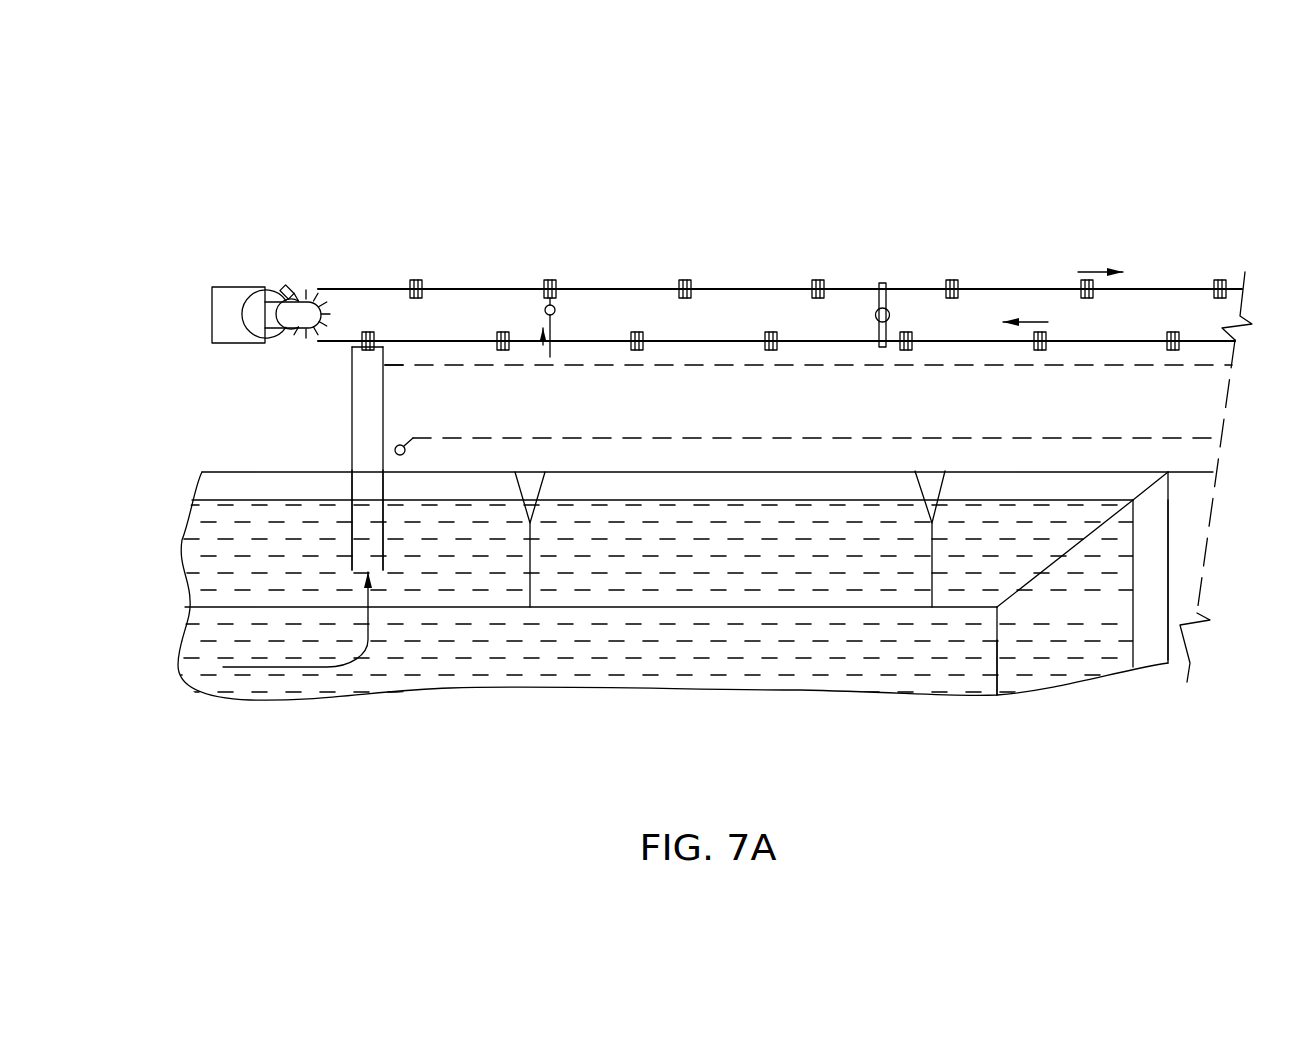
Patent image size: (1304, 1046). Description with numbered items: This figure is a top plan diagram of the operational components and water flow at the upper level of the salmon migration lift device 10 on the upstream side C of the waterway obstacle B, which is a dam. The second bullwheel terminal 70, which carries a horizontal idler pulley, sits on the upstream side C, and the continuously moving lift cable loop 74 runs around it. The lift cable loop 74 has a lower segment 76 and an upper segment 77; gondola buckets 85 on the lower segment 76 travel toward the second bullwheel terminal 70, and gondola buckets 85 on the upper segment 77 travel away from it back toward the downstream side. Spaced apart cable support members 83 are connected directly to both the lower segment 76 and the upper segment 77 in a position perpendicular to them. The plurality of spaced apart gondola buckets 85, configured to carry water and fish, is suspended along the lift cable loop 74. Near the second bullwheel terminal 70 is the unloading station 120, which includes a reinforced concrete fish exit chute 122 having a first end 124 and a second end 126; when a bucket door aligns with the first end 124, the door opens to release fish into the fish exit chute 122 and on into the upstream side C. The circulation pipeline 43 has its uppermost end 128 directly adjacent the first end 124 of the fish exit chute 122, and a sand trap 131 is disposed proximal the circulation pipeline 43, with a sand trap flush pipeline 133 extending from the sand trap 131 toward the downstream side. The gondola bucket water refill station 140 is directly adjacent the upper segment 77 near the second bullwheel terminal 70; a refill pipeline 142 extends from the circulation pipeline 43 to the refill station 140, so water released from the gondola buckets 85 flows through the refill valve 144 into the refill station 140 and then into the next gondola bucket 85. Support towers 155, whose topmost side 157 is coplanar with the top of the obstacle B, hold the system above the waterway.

The salmon migration lift device 10 is at (1076, 136).
The second bullwheel terminal 70 is at (240, 288).
The lift cable loop 74 is at (750, 287).
The lower segment 76 is at (690, 340).
The upper segment 77 is at (835, 288).
The cable support member 83 is at (888, 303).
The gondola bucket 85 is at (370, 332).
The gondola bucket water refill station 140 is at (541, 281).
The refill pipeline 142 is at (553, 357).
The refill valve 144 is at (556, 310).
The circulation pipeline 43 is at (467, 367).
The uppermost end 128 is at (404, 364).
The sand trap flush pipeline 133 is at (705, 437).
The unloading station 120 is at (352, 347).
The fish exit chute 122 is at (353, 393).
The first end 124 is at (362, 360).
The second end 126 is at (362, 458).
The sand trap 131 is at (396, 454).
The topmost side 157 is at (545, 472).
The support tower 155 is at (532, 562).
The waterway obstacle B is at (1156, 580).
The upstream side C is at (1042, 666).